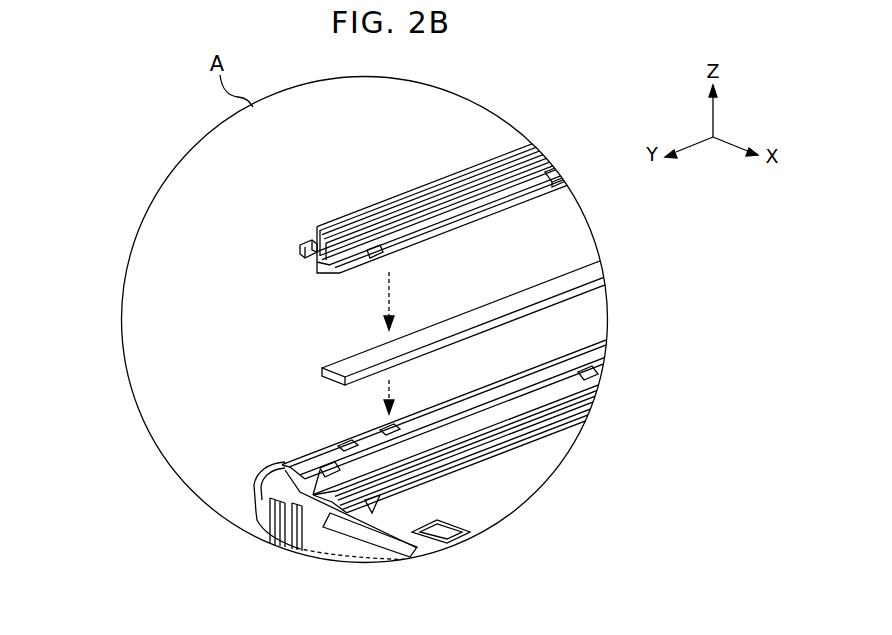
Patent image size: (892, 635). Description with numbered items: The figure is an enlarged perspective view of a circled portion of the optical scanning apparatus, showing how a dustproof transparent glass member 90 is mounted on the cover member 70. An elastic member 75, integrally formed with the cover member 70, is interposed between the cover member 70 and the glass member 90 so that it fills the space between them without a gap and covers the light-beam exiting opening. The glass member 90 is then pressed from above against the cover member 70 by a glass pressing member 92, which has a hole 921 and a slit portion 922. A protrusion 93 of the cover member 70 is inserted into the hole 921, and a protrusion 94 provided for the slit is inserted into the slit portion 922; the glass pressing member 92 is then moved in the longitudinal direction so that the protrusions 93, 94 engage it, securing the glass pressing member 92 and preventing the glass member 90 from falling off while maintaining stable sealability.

The cover member 70 is at (393, 520).
The elastic member 75 is at (272, 461).
The glass member 90 is at (568, 272).
The glass pressing member 92 is at (424, 184).
The hole 921 is at (303, 240).
The slit portion 922 is at (550, 165).
The protrusion 93 is at (335, 468).
The protrusion provided for the slit 94 is at (463, 465).